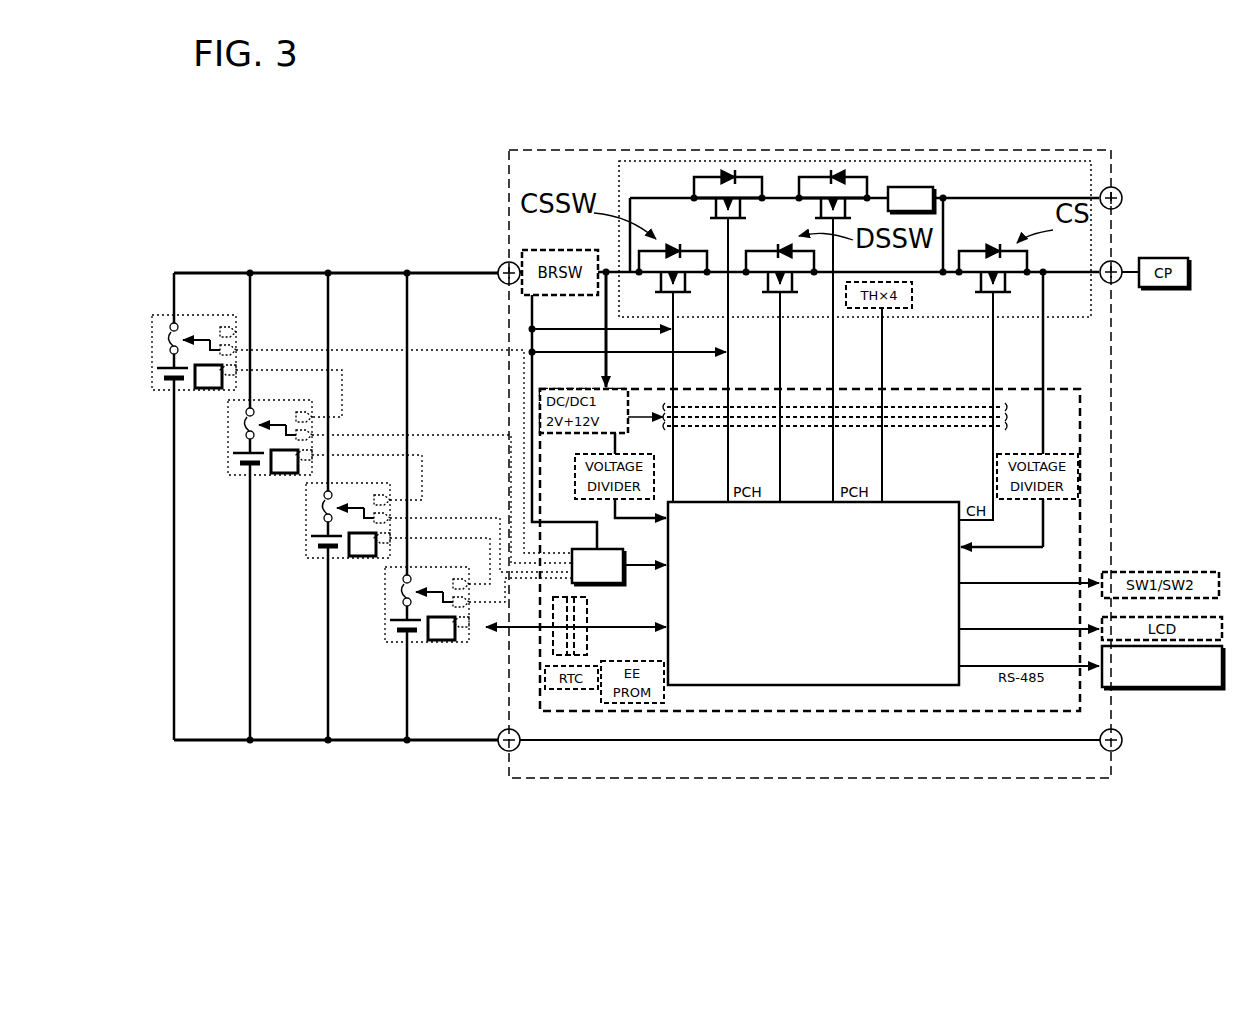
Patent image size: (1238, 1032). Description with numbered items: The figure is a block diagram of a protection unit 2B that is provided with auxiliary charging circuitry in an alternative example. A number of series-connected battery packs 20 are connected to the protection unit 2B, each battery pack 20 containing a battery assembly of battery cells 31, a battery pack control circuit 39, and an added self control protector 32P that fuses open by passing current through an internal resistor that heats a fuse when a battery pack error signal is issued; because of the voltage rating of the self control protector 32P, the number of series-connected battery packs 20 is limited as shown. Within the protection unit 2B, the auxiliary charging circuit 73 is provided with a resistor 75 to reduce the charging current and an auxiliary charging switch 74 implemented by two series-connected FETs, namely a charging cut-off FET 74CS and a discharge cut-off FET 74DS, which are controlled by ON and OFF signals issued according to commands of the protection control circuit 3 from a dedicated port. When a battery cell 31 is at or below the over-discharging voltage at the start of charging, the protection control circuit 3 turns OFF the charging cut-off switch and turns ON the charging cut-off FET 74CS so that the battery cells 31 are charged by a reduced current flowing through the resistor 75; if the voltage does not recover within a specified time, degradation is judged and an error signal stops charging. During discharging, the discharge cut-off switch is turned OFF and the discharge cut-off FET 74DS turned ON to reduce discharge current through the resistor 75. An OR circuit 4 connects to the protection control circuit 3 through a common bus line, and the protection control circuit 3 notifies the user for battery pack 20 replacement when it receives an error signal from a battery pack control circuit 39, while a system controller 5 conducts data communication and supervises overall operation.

The protection unit 2B is at (1060, 150).
The auxiliary charging circuit 73 is at (1005, 161).
The auxiliary charging switch 74 is at (657, 114).
The charging cut-off FET 74CS is at (729, 170).
The discharge cut-off FET 74DS is at (832, 170).
The resistor 75 is at (920, 187).
The protection control circuit 3 is at (913, 502).
The OR circuit 4 is at (600, 584).
The system controller 5 is at (1178, 688).
The battery pack 20 is at (378, 562).
The battery cell 31 is at (322, 557).
The battery pack control circuit 39 is at (365, 557).
The self control protector 32P is at (180, 338).